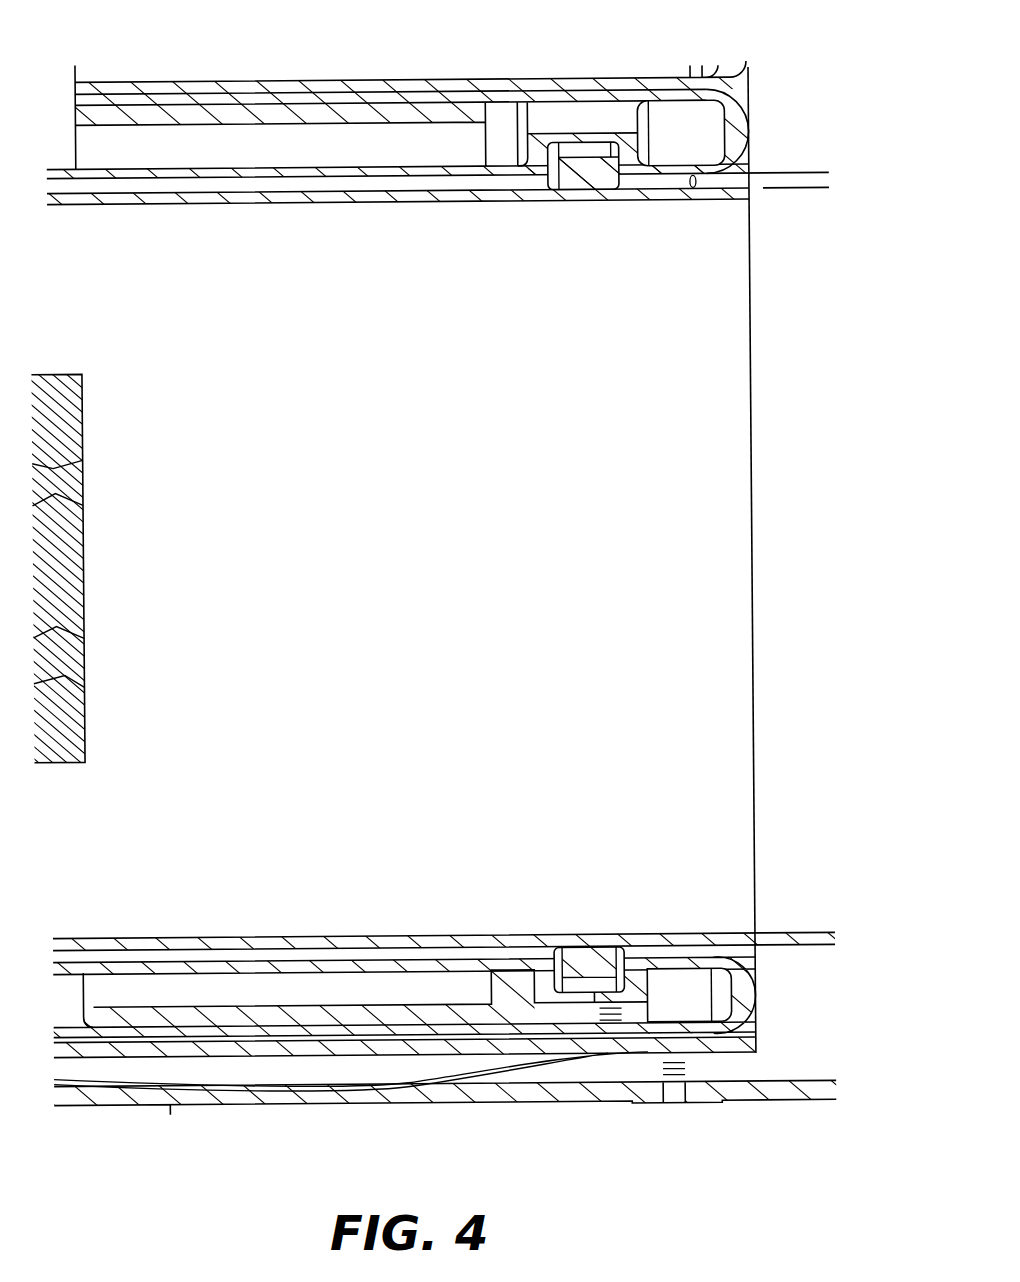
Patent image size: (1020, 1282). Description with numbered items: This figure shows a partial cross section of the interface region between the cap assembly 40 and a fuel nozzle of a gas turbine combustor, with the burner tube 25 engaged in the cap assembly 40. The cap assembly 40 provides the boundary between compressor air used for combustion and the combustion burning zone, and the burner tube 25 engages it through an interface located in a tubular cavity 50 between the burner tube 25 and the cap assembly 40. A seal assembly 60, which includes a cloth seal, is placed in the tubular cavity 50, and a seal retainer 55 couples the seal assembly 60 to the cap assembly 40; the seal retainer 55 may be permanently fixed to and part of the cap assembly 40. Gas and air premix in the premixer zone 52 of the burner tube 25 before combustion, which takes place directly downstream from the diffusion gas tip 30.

The burner tube 25 is at (122, 203).
The diffusion gas tip 30 is at (83, 620).
The cap assembly 40 is at (593, 78).
The tubular cavity 50 is at (270, 183).
The premixer zone 52 is at (55, 330).
The seal retainer 55 is at (630, 151).
The seal assembly 60 is at (612, 153).